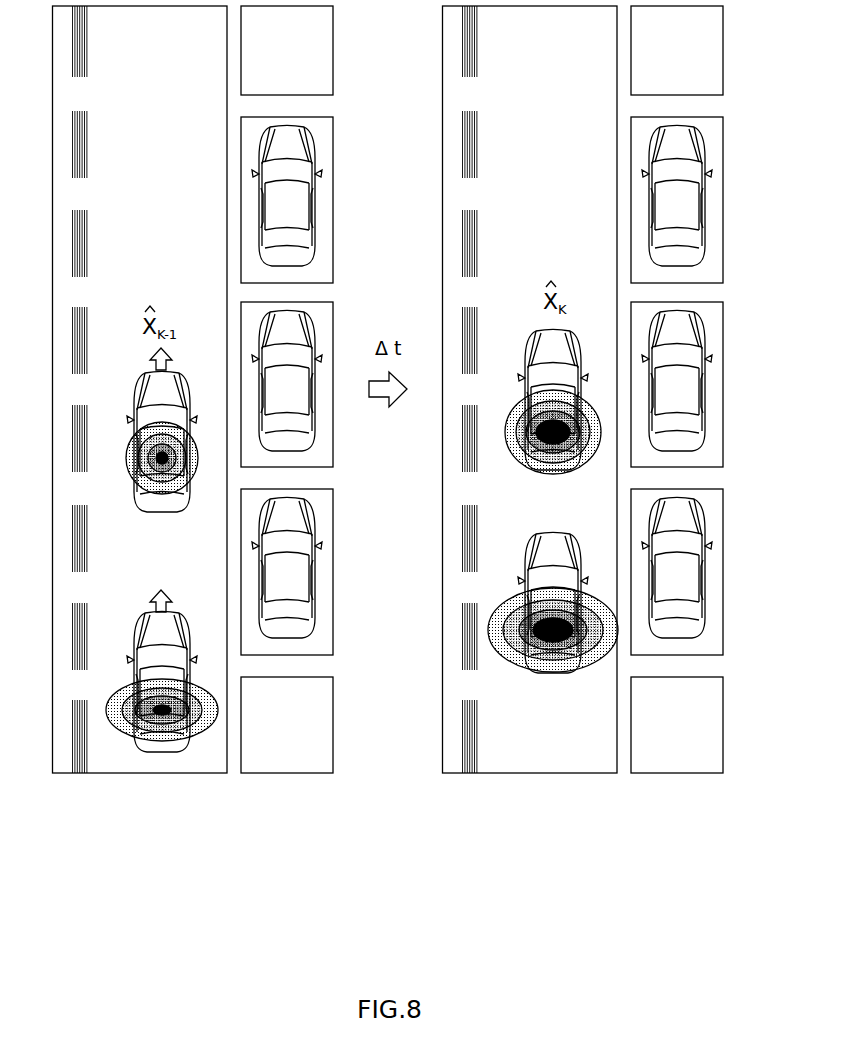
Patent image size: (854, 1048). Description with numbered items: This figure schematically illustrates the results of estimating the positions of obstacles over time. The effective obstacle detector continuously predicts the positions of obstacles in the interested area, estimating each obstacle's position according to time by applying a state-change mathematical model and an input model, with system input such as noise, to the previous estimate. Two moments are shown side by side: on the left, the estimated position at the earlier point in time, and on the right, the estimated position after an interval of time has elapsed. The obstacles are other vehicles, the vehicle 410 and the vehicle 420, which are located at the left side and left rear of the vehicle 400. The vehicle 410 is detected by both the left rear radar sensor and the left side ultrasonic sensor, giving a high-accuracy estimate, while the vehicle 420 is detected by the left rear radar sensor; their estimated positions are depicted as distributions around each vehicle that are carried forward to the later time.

The vehicle 400 is at (312, 434).
The vehicle 410 is at (161, 510).
The vehicle 420 is at (161, 750).